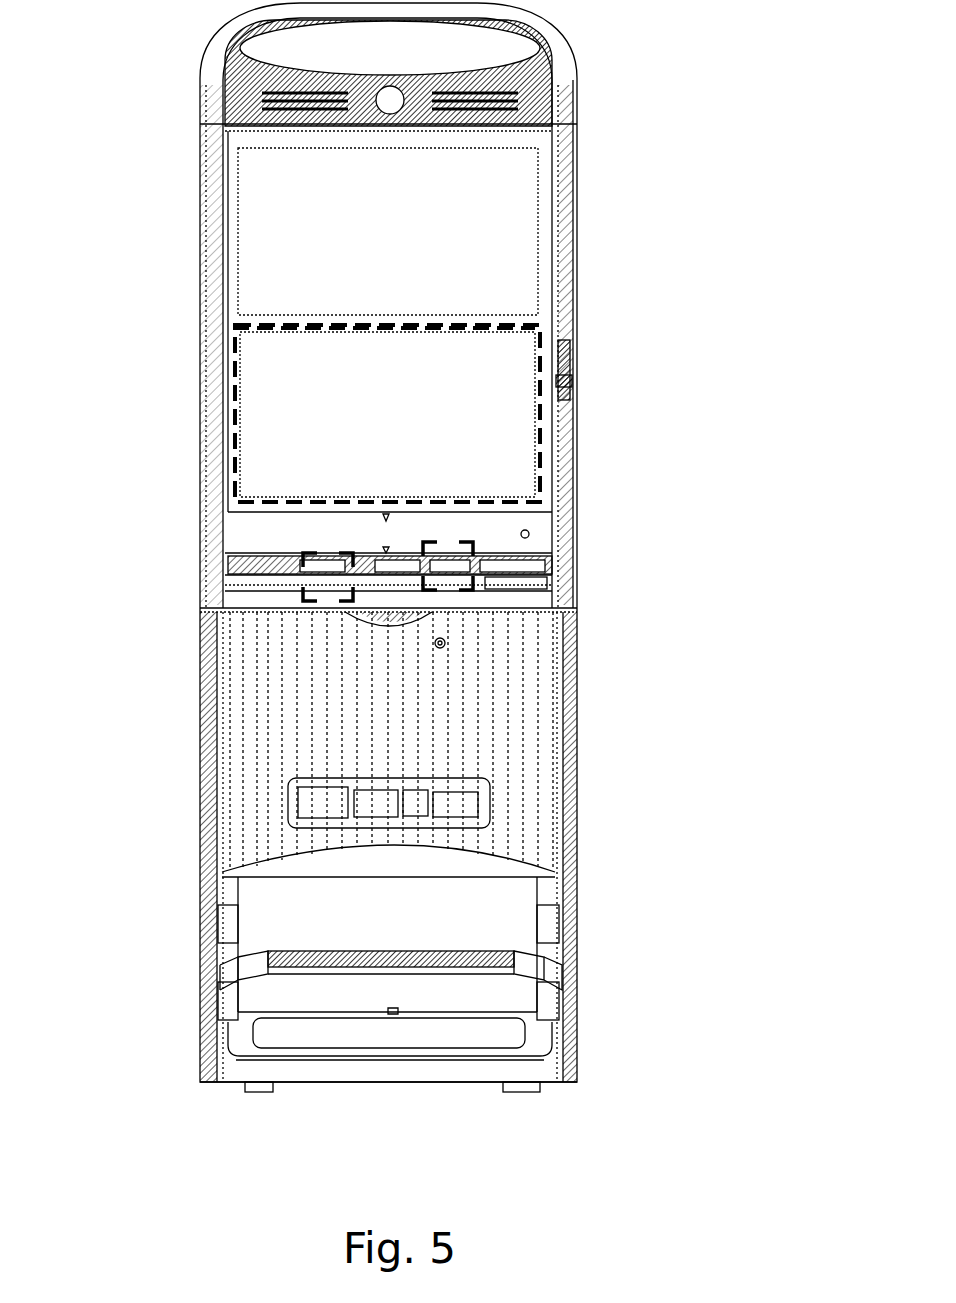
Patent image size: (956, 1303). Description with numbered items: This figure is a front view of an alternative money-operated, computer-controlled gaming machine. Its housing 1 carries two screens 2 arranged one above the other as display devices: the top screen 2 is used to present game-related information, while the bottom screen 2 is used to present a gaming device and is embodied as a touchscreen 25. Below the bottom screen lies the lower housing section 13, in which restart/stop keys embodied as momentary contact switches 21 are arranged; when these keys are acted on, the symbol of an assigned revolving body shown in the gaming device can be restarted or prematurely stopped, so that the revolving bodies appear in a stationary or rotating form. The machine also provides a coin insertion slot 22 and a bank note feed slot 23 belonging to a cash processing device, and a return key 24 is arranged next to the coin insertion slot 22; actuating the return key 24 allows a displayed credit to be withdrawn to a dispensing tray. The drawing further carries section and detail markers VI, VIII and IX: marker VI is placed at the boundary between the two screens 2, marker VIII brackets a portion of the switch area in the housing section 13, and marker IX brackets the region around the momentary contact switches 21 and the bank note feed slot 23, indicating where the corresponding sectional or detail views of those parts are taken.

The housing 1 is at (187, 147).
The screen 2 is at (411, 233).
The housing section 13 is at (260, 534).
The momentary contact switch 21 is at (350, 545).
The coin insertion slot 22 is at (565, 380).
The bank note feed slot 23 is at (232, 573).
The return key 24 is at (563, 343).
The touchscreen 25 is at (258, 375).
The section line VI is at (490, 328).
The detail VIII is at (478, 555).
The detail IX is at (303, 603).